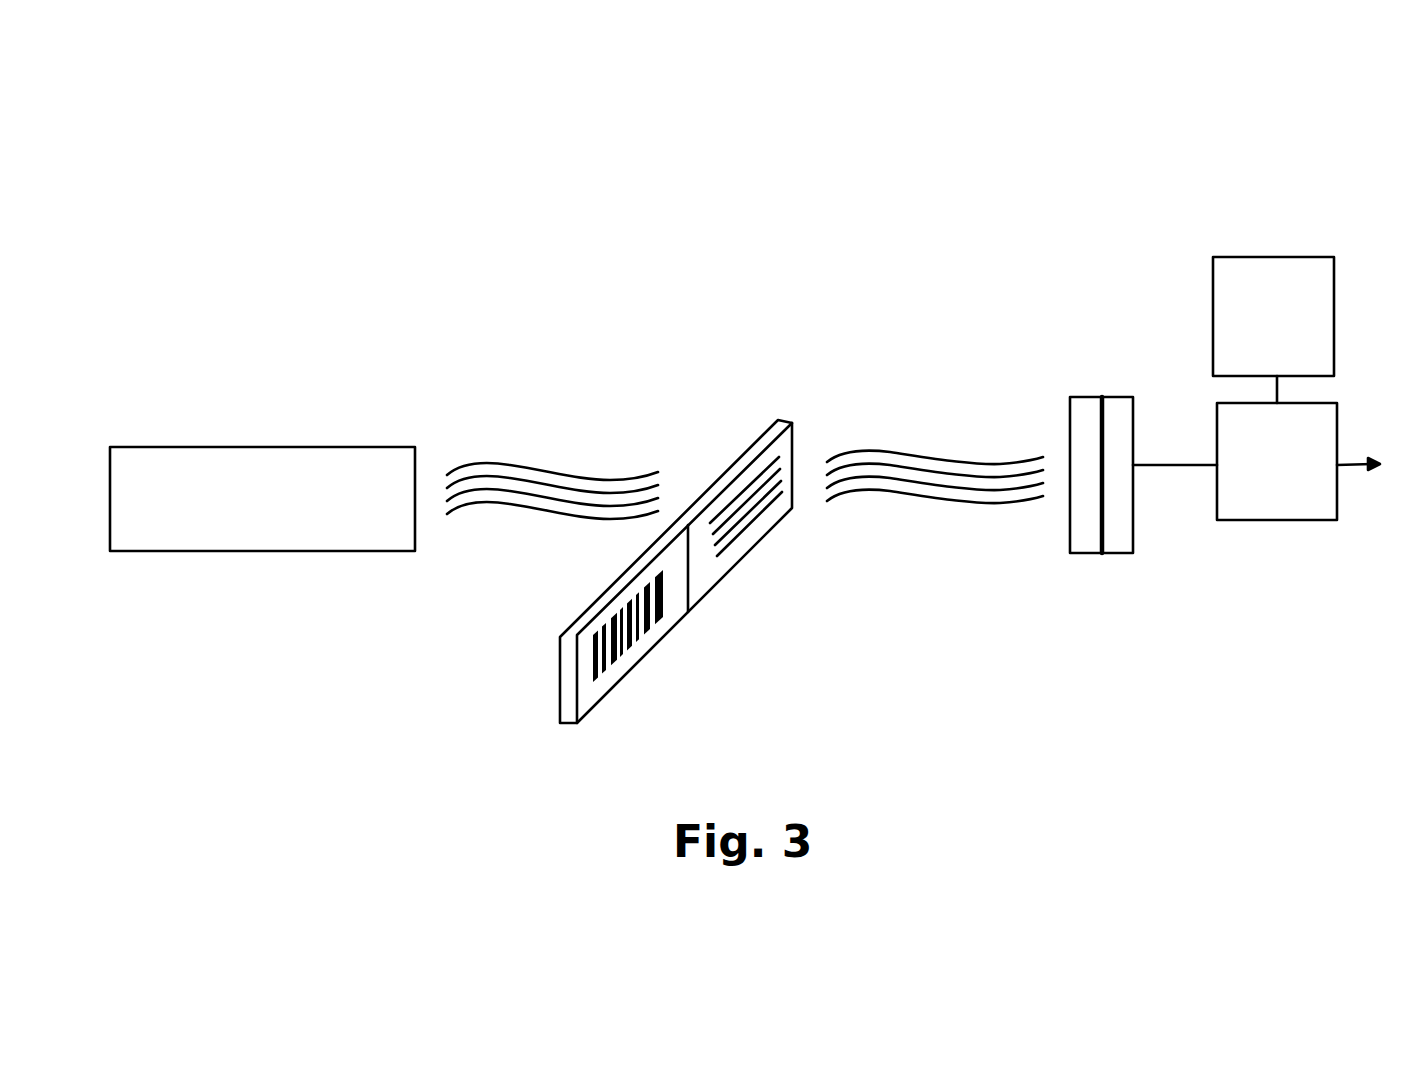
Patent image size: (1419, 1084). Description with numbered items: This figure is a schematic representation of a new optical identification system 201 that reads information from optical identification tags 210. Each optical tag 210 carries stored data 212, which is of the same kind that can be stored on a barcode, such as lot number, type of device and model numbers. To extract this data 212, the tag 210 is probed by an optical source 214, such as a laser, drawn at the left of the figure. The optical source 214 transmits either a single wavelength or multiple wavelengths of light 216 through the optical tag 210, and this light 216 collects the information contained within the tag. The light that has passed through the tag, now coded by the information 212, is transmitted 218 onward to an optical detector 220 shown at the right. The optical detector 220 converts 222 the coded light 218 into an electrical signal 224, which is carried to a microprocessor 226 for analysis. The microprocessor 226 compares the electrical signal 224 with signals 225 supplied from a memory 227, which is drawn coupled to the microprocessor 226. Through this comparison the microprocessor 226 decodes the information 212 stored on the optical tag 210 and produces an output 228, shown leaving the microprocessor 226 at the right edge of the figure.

The system 201 is at (826, 312).
The identification tag 210 is at (738, 455).
The data 212 is at (605, 678).
The optical source 214 is at (230, 551).
The light 216 is at (550, 473).
The transmitted light 218 is at (935, 457).
The optical detector 220 is at (1083, 555).
The conversion 222 is at (1115, 555).
The electrical signal 224 is at (1175, 465).
The signals from memory 225 is at (1277, 389).
The microprocessor 226 is at (1282, 520).
The memory 227 is at (1213, 278).
The output 228 is at (1357, 460).